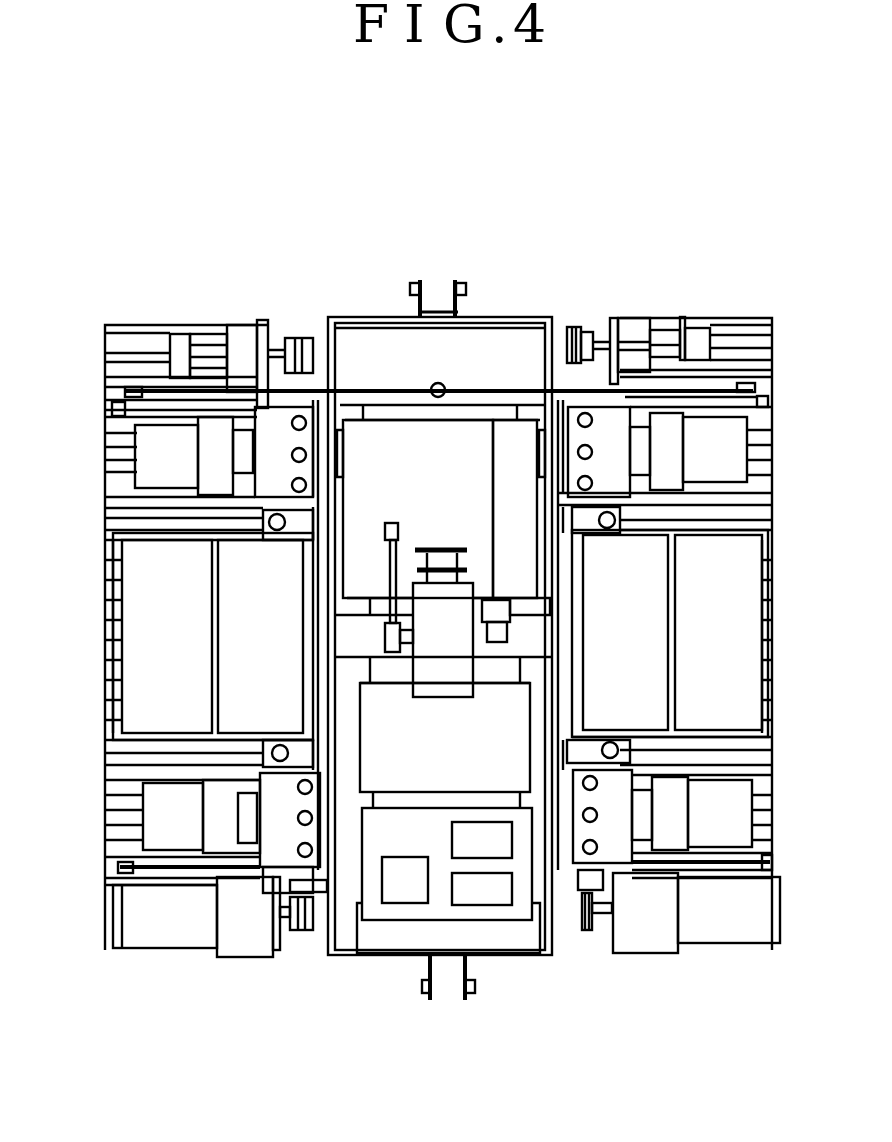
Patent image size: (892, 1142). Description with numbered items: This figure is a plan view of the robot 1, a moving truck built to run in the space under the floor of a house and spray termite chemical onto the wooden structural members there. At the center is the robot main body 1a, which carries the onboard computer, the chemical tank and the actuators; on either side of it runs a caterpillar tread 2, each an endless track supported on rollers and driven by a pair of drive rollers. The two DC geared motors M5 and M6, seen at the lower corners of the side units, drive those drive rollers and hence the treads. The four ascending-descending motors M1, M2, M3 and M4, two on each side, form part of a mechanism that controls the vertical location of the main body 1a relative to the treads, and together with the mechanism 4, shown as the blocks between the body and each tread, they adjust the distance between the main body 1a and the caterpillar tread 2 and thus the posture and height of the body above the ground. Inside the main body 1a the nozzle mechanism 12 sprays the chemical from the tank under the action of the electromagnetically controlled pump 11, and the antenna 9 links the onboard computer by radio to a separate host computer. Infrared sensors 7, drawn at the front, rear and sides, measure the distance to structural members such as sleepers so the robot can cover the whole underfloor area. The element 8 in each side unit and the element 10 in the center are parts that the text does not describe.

The machining apparatus 1 is at (636, 222).
The base 1a is at (515, 958).
The side frame 2 is at (140, 325).
The clamp block 4 is at (276, 432).
The guide rail clamp 7 is at (413, 290).
The housing box 8 is at (167, 640).
The center frame 9 is at (485, 390).
The spindle body 10 is at (460, 675).
The slide table 11 is at (383, 455).
The feed rod 12 is at (392, 567).
The motor M1 is at (150, 458).
The motor M2 is at (170, 810).
The motor M3 is at (730, 812).
The motor M4 is at (727, 458).
The motor M5 is at (147, 917).
The motor M6 is at (750, 908).